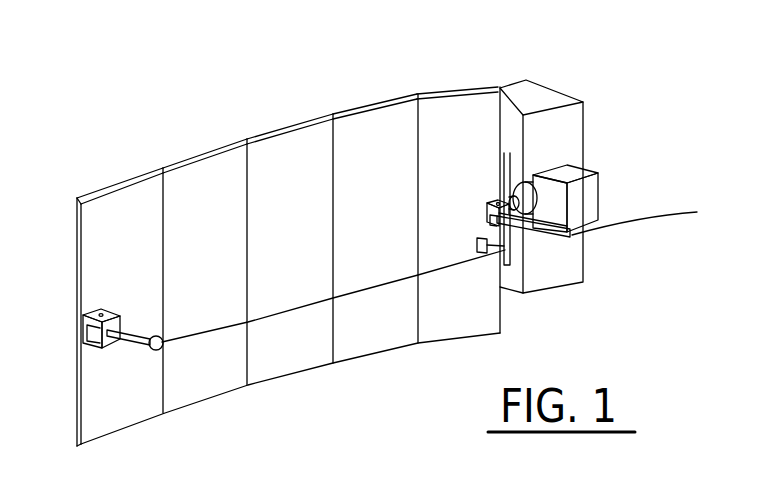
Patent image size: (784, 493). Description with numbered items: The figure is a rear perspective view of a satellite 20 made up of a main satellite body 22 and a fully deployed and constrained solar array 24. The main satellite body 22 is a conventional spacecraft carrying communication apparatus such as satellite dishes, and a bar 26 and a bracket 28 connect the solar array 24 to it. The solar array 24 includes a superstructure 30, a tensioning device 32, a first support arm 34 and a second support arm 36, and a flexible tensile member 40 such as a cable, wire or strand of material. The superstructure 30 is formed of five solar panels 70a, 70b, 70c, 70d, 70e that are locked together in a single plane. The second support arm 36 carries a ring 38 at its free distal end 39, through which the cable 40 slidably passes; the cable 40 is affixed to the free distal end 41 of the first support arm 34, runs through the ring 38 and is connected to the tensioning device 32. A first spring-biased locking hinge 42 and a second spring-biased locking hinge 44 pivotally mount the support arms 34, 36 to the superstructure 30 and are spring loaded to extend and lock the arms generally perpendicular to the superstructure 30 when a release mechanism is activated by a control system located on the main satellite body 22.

The satellite 20 is at (380, 45).
The main satellite body 22 is at (577, 147).
The solar array 24 is at (118, 418).
The bar 26 is at (512, 198).
The bracket 28 is at (513, 267).
The superstructure 30 is at (267, 368).
The tensioning device 32 is at (477, 243).
The first support arm 34 is at (132, 333).
The second support arm 36 is at (567, 205).
The ring 38 is at (570, 237).
The free distal end 39 is at (656, 215).
The flexible tensile member 40 is at (358, 292).
The free distal end 41 is at (163, 332).
The first spring-biased locking hinge 42 is at (93, 308).
The second spring-biased locking hinge 44 is at (487, 207).
The solar panel 70a is at (126, 190).
The solar panel 70b is at (213, 163).
The solar panel 70c is at (288, 142).
The solar panel 70d is at (378, 118).
The solar panel 70e is at (457, 105).